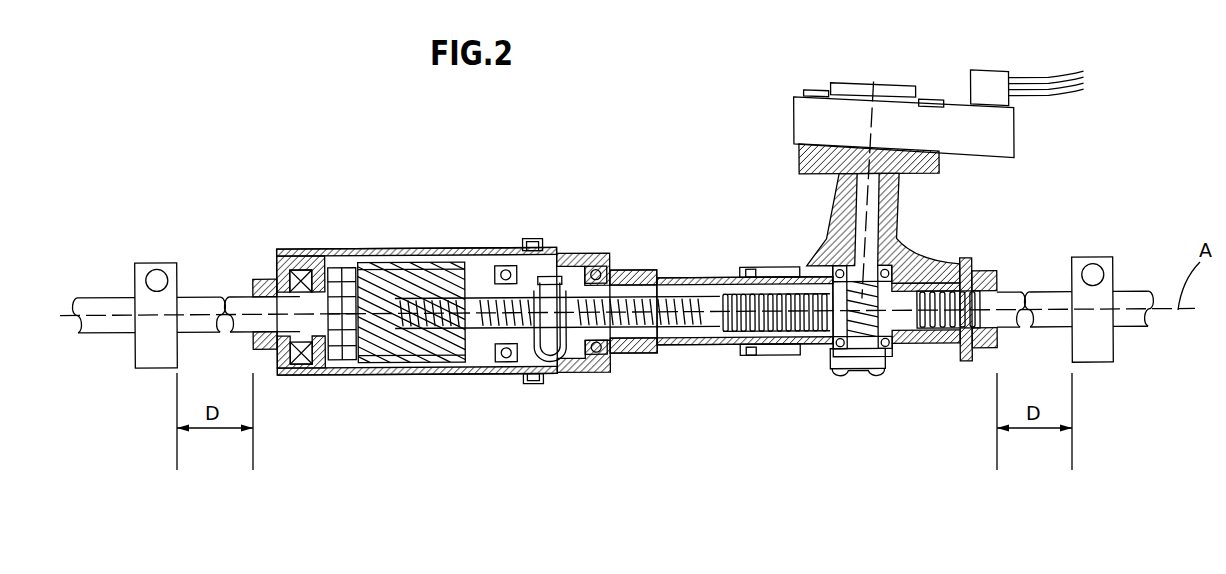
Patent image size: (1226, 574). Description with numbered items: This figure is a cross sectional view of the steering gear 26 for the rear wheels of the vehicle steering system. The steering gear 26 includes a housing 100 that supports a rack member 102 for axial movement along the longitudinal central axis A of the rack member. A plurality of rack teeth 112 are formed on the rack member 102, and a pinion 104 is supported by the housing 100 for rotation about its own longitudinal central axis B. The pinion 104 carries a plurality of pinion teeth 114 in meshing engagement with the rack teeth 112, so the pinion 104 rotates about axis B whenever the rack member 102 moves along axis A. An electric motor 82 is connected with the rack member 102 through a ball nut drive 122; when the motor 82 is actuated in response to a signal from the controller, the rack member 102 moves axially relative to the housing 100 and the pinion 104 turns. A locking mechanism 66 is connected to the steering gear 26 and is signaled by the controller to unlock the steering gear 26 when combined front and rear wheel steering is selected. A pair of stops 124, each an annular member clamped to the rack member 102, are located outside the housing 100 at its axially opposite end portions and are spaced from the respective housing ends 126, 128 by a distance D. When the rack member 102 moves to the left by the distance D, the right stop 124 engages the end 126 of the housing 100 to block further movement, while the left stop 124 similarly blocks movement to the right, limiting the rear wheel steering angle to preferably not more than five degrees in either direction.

The steering gear 26 is at (404, 214).
The locking mechanism 66 is at (1032, 143).
The electric motor 82 is at (385, 355).
The housing 100 is at (708, 278).
The rack member 102 is at (1028, 285).
The pinion 104 is at (877, 215).
The rack teeth 112 is at (961, 299).
The pinion teeth 114 is at (873, 290).
The ball nut drive 122 is at (560, 340).
The stops 124 is at (163, 365).
The end of the housing 126 is at (1000, 333).
The end of the housing 128 is at (237, 292).